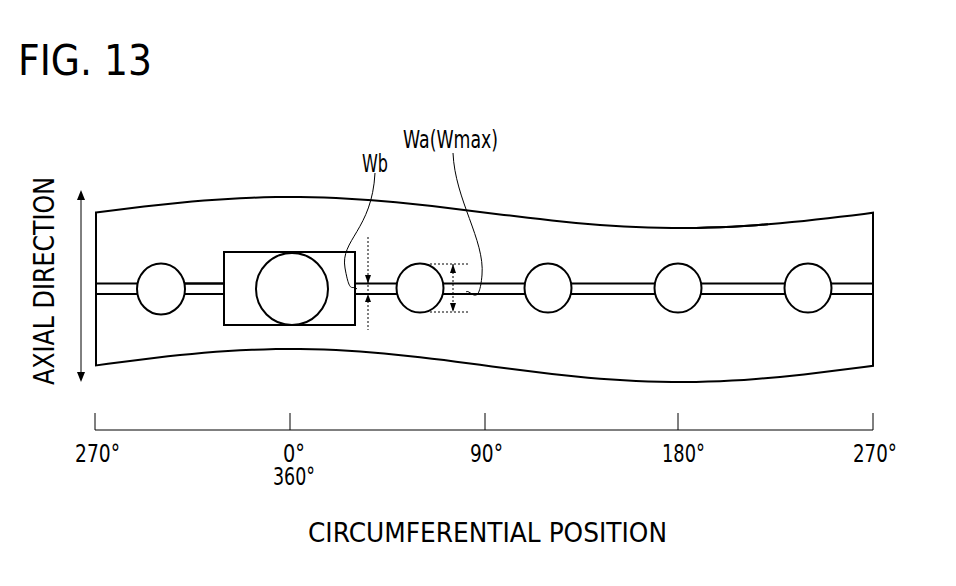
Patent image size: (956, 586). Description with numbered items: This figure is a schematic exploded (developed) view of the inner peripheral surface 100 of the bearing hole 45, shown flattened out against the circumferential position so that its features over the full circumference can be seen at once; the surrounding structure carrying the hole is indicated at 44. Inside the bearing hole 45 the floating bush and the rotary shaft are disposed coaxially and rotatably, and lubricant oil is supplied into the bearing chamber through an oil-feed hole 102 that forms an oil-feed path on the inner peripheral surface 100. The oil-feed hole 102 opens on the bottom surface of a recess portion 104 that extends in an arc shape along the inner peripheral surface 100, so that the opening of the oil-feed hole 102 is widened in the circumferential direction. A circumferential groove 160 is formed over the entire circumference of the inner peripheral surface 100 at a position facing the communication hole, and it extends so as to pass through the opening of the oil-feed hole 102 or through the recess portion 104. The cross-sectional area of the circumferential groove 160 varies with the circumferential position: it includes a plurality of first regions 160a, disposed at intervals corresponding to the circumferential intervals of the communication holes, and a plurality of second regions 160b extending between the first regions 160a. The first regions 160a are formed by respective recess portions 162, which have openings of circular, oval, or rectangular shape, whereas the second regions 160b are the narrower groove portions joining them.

The annular member 44 is at (785, 175).
The bearing hole 45 is at (727, 232).
The inner peripheral surface 100 is at (678, 242).
The oil-feed hole 102 is at (292, 277).
The recess portion 104 is at (332, 262).
The circumferential groove 160 is at (635, 283).
The first regions 160a is at (548, 265).
The second regions 160b is at (193, 283).
The recess portions 162 is at (158, 272).